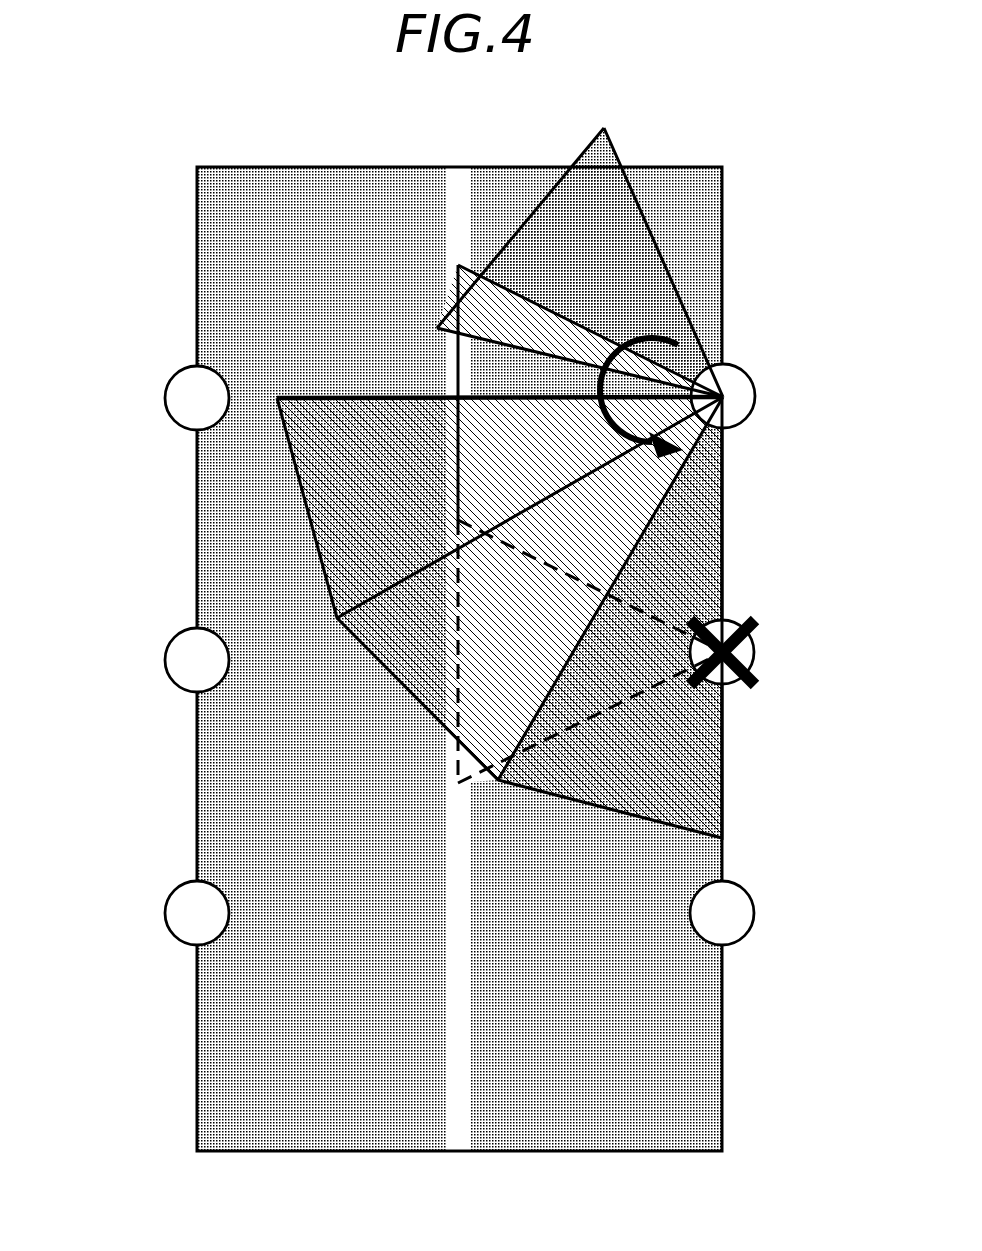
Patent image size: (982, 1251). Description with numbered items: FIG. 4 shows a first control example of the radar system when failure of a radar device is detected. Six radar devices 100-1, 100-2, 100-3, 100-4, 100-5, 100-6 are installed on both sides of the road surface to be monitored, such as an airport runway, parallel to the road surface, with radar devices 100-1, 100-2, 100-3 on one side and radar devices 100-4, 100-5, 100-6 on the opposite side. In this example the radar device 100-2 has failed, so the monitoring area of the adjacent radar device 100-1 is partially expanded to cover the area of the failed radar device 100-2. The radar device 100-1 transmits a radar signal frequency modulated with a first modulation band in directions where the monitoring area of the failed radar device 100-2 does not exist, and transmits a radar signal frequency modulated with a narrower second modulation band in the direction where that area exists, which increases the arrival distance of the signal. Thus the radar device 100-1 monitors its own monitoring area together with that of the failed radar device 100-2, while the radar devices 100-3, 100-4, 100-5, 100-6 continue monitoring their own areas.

The radar device 100-1 is at (753, 382).
The radar device 100-2 is at (753, 640).
The radar device 100-3 is at (753, 900).
The radar device 100-4 is at (165, 918).
The radar device 100-5 is at (165, 665).
The radar device 100-6 is at (165, 403).